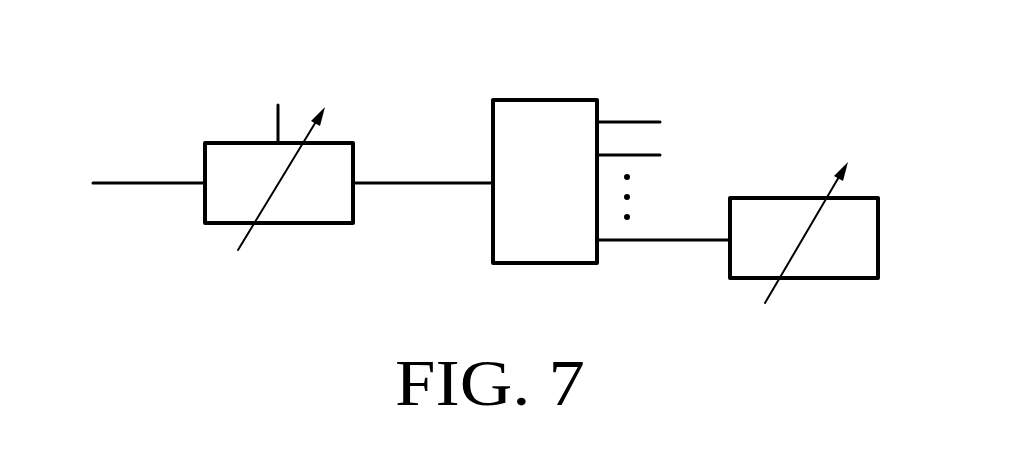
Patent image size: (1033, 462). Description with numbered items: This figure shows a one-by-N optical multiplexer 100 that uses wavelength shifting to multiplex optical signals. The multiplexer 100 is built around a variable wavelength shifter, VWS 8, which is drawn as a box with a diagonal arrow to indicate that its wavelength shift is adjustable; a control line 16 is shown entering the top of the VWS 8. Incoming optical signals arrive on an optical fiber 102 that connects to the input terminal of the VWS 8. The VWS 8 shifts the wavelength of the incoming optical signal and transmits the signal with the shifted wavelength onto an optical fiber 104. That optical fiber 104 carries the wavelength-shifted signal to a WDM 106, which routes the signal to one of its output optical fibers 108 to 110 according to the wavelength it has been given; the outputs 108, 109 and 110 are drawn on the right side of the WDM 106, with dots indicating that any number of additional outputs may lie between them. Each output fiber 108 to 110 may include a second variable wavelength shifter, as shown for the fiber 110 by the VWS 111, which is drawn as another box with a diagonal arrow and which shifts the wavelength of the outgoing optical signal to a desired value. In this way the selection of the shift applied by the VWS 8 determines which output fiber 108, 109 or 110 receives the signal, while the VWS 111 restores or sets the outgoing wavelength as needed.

The optical multiplexer 100 is at (160, 58).
The optical fiber 102 is at (142, 188).
The VWS 8 is at (293, 227).
The control input 16 is at (277, 123).
The optical fiber 104 is at (425, 177).
The WDM 106 is at (530, 98).
The output optical fiber 108 is at (636, 120).
The output optical fiber 109 is at (647, 150).
The output optical fiber 110 is at (683, 242).
The VWS 111 is at (833, 280).